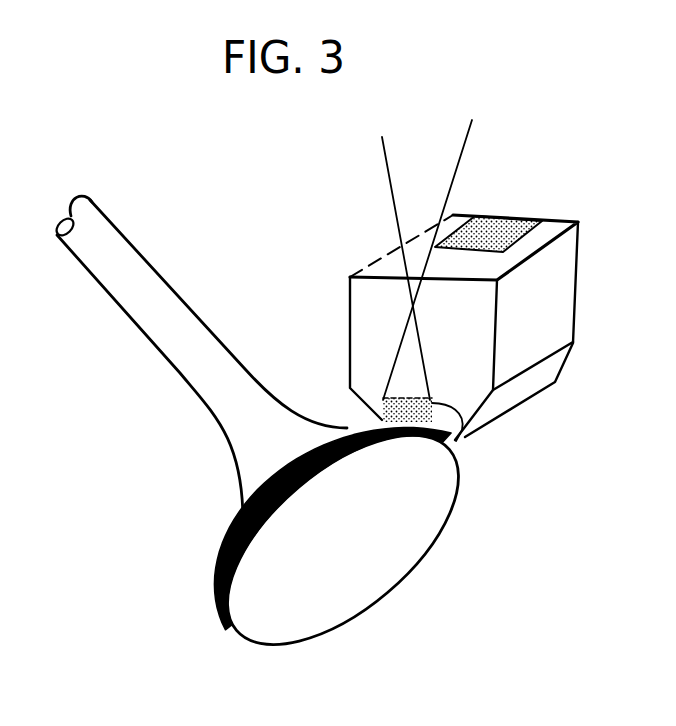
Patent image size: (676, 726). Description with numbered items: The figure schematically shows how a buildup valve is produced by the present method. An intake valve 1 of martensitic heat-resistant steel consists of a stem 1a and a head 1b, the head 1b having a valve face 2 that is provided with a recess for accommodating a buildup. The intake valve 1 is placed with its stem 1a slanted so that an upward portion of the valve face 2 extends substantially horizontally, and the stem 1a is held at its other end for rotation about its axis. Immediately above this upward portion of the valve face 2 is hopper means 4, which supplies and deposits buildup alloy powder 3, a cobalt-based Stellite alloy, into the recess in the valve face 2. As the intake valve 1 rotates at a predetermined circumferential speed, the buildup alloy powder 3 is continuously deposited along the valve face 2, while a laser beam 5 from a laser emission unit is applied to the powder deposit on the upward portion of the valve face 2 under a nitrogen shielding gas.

The intake valve 1 is at (113, 316).
The stem 1a is at (197, 402).
The head 1b is at (239, 523).
The valve face 2 is at (319, 442).
The buildup alloy powder 3 is at (457, 439).
The hopper means 4 is at (570, 278).
The laser beam 5 is at (440, 172).